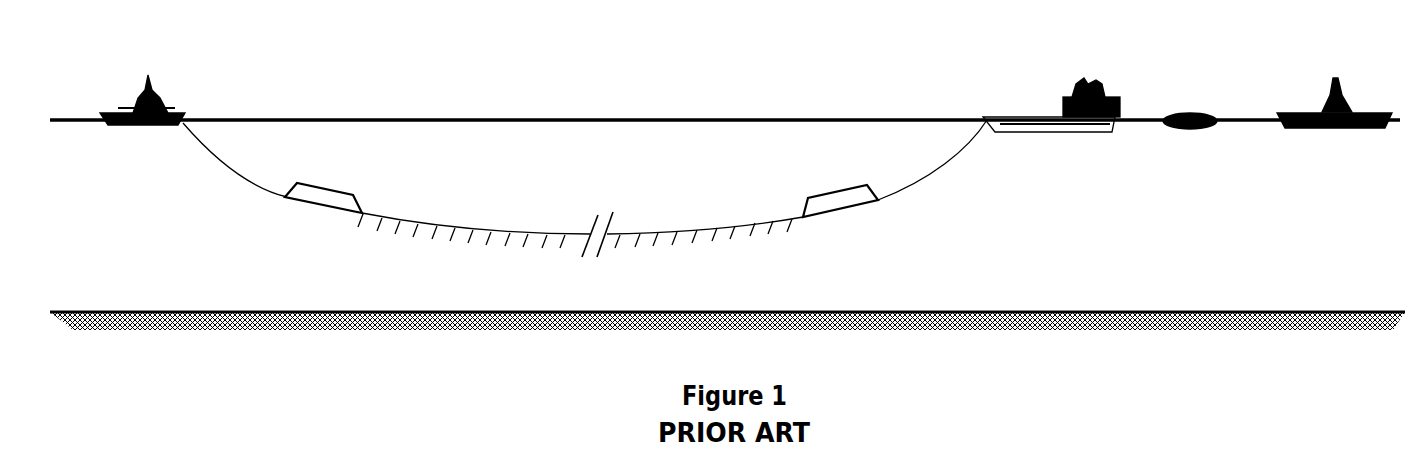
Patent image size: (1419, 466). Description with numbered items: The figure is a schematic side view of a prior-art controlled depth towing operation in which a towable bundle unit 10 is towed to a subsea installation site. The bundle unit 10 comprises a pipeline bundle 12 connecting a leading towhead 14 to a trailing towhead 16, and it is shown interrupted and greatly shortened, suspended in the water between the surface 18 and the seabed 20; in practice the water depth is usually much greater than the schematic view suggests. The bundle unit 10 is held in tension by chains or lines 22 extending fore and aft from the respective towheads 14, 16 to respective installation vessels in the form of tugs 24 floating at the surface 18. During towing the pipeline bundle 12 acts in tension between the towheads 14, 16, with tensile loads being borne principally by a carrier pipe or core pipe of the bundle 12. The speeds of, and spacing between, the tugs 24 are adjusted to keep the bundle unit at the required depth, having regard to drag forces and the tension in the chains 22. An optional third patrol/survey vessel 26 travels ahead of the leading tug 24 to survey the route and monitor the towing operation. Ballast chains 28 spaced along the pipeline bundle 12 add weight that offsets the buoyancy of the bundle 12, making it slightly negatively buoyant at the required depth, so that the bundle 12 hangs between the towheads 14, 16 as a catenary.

The towable bundle unit 10 is at (626, 203).
The pipeline bundle 12 is at (747, 223).
The leading towhead 14 is at (857, 198).
The trailing towhead 16 is at (320, 200).
The surface 18 is at (1213, 120).
The seabed 20 is at (1085, 312).
The chains or lines 22 is at (240, 173).
The tugs 24 is at (1075, 100).
The patrol/survey vessel 26 is at (1328, 120).
The ballast chains 28 is at (550, 243).